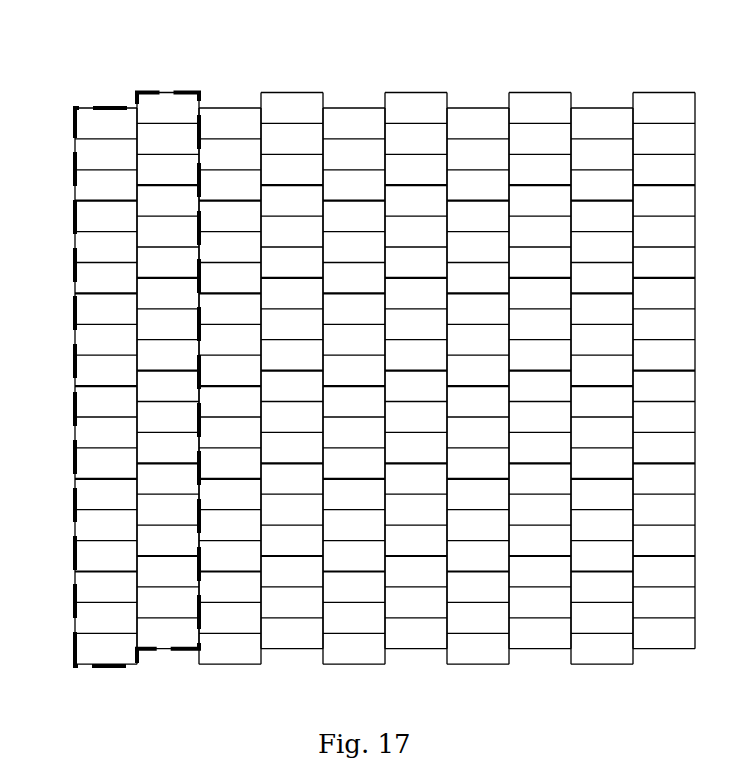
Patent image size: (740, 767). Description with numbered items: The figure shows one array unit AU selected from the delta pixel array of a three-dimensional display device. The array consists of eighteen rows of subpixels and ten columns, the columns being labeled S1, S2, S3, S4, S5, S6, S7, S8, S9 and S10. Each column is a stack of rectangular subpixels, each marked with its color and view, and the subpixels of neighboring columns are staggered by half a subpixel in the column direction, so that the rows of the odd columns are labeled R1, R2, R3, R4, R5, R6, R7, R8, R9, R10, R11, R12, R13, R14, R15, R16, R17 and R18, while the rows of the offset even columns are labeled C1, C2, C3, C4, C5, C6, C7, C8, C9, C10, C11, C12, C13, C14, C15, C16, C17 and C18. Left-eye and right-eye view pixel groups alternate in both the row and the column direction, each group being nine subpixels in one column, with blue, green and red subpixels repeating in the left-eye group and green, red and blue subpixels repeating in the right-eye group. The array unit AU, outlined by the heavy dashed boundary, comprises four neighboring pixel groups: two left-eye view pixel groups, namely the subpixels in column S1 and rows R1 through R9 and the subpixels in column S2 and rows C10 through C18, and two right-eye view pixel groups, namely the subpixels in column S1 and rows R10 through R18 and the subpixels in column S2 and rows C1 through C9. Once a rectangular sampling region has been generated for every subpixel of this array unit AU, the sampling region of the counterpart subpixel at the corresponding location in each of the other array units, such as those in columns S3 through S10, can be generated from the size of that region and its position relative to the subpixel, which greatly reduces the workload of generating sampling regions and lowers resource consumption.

The array unit AU is at (105, 107).
The column S1 is at (106, 365).
The column S2 is at (168, 357).
The column S3 is at (230, 365).
The column S4 is at (292, 357).
The column S5 is at (354, 365).
The column S6 is at (416, 357).
The column S7 is at (478, 365).
The column S8 is at (540, 357).
The column S9 is at (602, 365).
The column S10 is at (664, 357).
The row C1 is at (325, 107).
The row C2 is at (325, 138).
The row C3 is at (325, 168).
The row C4 is at (325, 199).
The row C5 is at (325, 230).
The row C6 is at (325, 262).
The row C7 is at (325, 292).
The row C8 is at (325, 323).
The row C9 is at (325, 353).
The row C10 is at (325, 382).
The row C11 is at (325, 415).
The row C12 is at (325, 452).
The row C13 is at (325, 473).
The row C14 is at (325, 509).
The row C15 is at (325, 543).
The row C16 is at (325, 567).
The row C17 is at (325, 600).
The row C18 is at (325, 637).
The row R1 is at (370, 124).
The row R2 is at (370, 154).
The row R3 is at (370, 185).
The row R4 is at (370, 216).
The row R5 is at (370, 247).
The row R6 is at (370, 278).
The row R7 is at (370, 309).
The row R8 is at (370, 340).
The row R9 is at (370, 371).
The row R10 is at (370, 402).
The row R11 is at (370, 432).
The row R12 is at (370, 463).
The row R13 is at (370, 494).
The row R14 is at (370, 525).
The row R15 is at (370, 556).
The row R16 is at (370, 587).
The row R17 is at (370, 618).
The row R18 is at (370, 649).